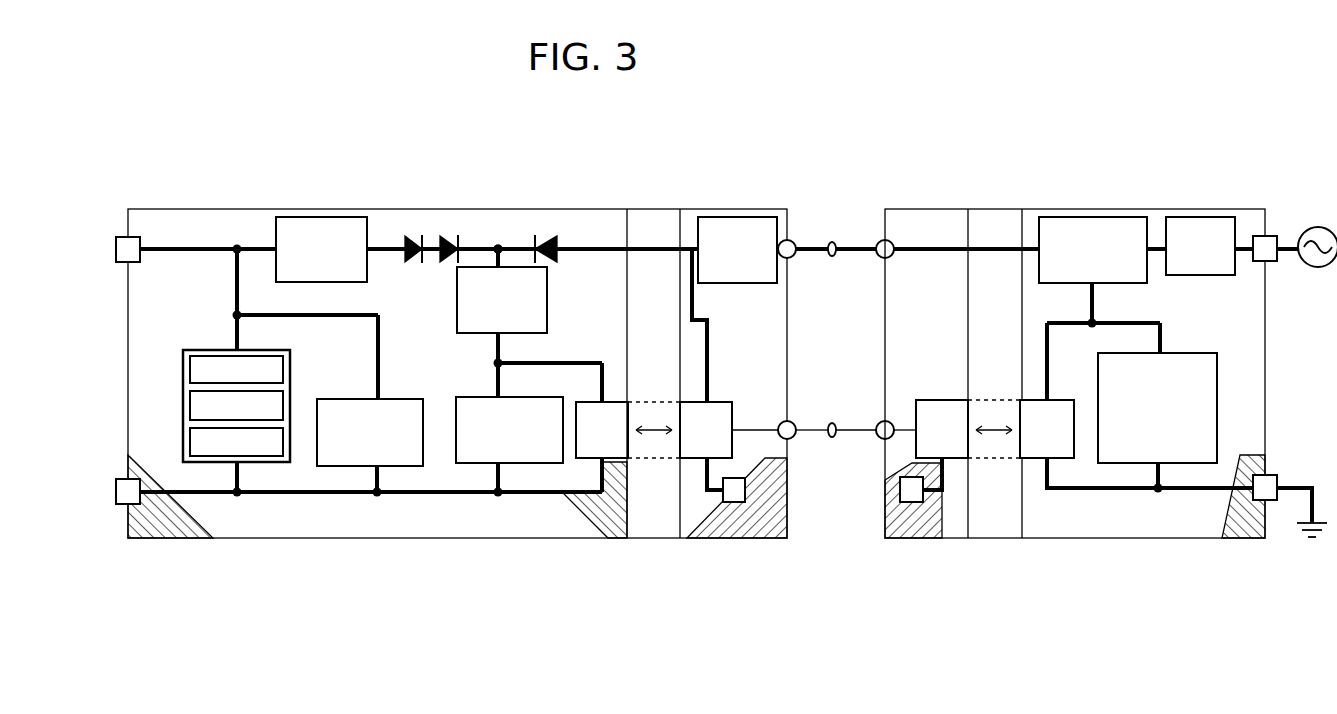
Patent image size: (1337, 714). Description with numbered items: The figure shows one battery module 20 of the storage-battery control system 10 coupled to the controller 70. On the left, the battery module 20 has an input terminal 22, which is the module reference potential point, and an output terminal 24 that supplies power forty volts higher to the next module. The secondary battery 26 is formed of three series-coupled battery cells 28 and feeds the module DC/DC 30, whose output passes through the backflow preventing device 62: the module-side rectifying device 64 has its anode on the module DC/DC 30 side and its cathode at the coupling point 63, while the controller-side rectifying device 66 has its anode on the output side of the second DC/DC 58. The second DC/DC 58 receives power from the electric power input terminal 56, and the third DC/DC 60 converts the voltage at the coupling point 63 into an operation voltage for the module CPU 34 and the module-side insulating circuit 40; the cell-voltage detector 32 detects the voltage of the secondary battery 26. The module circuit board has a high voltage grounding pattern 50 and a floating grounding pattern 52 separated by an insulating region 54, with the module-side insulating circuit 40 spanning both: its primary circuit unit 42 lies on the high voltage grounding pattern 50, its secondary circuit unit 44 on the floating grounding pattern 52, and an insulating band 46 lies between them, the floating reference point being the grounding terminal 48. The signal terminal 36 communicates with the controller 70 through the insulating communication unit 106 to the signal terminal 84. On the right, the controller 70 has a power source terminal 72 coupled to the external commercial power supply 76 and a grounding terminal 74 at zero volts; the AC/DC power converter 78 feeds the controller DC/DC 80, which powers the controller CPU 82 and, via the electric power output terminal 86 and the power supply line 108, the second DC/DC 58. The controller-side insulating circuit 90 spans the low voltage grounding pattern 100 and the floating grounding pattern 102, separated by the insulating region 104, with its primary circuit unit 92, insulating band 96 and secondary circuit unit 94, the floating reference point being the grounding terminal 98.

The storage-battery control system 10 is at (187, 586).
The battery module 20 is at (197, 209).
The input terminal 22 is at (126, 479).
The output terminal 24 is at (126, 262).
The secondary battery 26 is at (213, 382).
The battery cell 28 is at (190, 408).
The module DC/DC 30 is at (276, 240).
The cell-voltage detector 32 is at (410, 399).
The module CPU 34 is at (463, 397).
The signal terminal 36 is at (793, 422).
The module-side insulating circuit 40 is at (650, 358).
The primary circuit unit 42 is at (612, 402).
The secondary circuit unit 44 is at (688, 383).
The insulating band 46 is at (652, 415).
The grounding terminal 48 is at (745, 500).
The high voltage grounding pattern 50 is at (600, 538).
The floating grounding pattern 52 is at (712, 538).
The insulating region 54 is at (655, 538).
The electric power input terminal 56 is at (793, 241).
The second DC/DC 58 is at (738, 217).
The third DC/DC 60 is at (457, 308).
The backflow preventing device 62 is at (484, 180).
The coupling point 63 is at (498, 249).
The module-side rectifying device 64 is at (432, 236).
The controller-side rectifying device 66 is at (545, 201).
The controller 70 is at (945, 209).
The power source terminal 72 is at (1268, 236).
The grounding terminal 74 is at (1268, 475).
The external commercial power supply 76 is at (1318, 268).
The AC/DC power converter 78 is at (1200, 217).
The controller DC/DC 80 is at (1092, 217).
The controller CPU 82 is at (1196, 353).
The signal terminal 84 is at (879, 423).
The electric power output terminal 86 is at (879, 242).
The controller-side insulating circuit 90 is at (995, 372).
The primary circuit unit 92 is at (1041, 393).
The secondary circuit unit 94 is at (942, 400).
The insulating band 96 is at (995, 415).
The grounding terminal 98 is at (896, 520).
The low voltage grounding pattern 100 is at (1246, 538).
The floating grounding pattern 102 is at (926, 538).
The insulating region 104 is at (995, 538).
The insulating communication unit 106 is at (832, 438).
The power supply line 108 is at (832, 257).